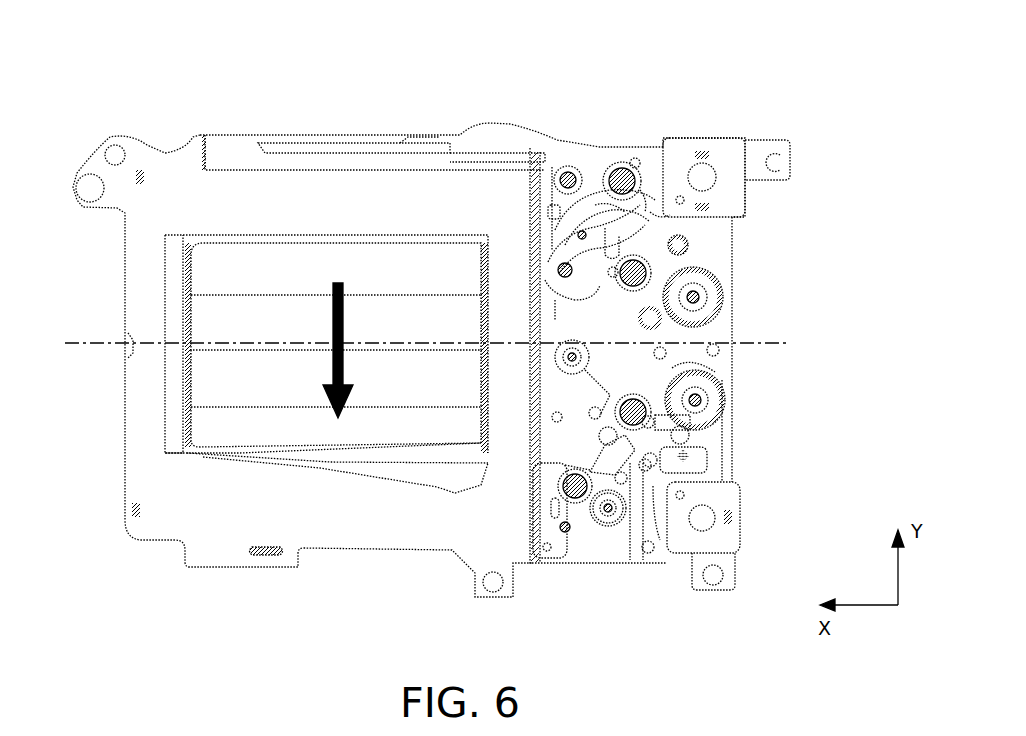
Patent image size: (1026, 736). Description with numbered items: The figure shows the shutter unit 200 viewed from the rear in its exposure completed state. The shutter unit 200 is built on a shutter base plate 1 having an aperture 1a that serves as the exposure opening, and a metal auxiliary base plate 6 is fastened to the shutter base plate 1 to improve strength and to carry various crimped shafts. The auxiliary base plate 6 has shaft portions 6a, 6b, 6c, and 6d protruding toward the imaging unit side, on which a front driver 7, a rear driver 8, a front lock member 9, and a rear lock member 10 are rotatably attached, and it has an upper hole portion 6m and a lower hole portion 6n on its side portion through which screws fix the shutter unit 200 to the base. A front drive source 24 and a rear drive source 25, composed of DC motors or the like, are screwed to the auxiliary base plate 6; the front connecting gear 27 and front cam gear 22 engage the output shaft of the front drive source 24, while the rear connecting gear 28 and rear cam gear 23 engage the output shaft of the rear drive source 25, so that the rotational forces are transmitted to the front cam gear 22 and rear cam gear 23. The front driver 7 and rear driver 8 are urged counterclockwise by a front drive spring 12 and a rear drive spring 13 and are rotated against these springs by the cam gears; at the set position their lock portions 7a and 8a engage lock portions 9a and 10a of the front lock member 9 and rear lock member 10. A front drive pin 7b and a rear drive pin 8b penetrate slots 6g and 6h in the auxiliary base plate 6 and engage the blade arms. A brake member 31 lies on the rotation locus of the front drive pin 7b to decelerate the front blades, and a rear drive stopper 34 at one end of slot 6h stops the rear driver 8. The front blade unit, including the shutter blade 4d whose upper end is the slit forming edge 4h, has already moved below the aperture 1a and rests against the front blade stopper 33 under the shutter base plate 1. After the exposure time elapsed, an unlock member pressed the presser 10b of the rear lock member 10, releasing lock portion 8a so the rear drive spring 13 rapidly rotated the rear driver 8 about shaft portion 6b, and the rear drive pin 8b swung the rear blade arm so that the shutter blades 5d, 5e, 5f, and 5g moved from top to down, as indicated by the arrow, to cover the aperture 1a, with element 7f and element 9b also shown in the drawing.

The shutter base plate 1 is at (147, 468).
The aperture 1a is at (180, 278).
The shutter blade 4d is at (462, 475).
The slit forming edge 4h is at (328, 463).
The shutter blade 5d is at (215, 427).
The shutter blade 5e is at (215, 387).
The shutter blade 5f is at (202, 331).
The shutter blade 5g is at (208, 267).
The auxiliary base plate 6 is at (758, 147).
The shaft portion 6a is at (623, 410).
The shaft portion 6b is at (640, 277).
The shaft portion 6c is at (573, 487).
The shaft portion 6d is at (622, 178).
The slot 6g is at (557, 417).
The slot 6h is at (603, 210).
The upper hole portion 6m is at (772, 158).
The lower hole portion 6n is at (717, 575).
The front driver 7 is at (608, 397).
The lock portion 7a is at (647, 472).
The front drive pin 7b is at (623, 480).
The gear pin 7f is at (595, 413).
The rear driver 8 is at (583, 253).
The lock portion 8a is at (595, 247).
The rear drive pin 8b is at (570, 267).
The front lock member 9 is at (577, 537).
The lock portion 9a is at (573, 442).
The lever plate arm 9b is at (573, 462).
The rear lock member 10 is at (587, 177).
The lock portion 10a is at (655, 207).
The presser 10b is at (647, 195).
The front drive spring 12 is at (647, 420).
The rear drive spring 13 is at (613, 270).
The front cam gear 22 is at (715, 378).
The rear cam gear 23 is at (725, 283).
The front drive source 24 is at (727, 535).
The rear drive source 25 is at (720, 168).
The front connecting gear 27 is at (698, 462).
The rear connecting gear 28 is at (708, 250).
The brake member 31 is at (653, 480).
The front blade stopper 33 is at (263, 553).
The rear drive stopper 34 is at (550, 277).
The shutter unit 200 is at (590, 70).